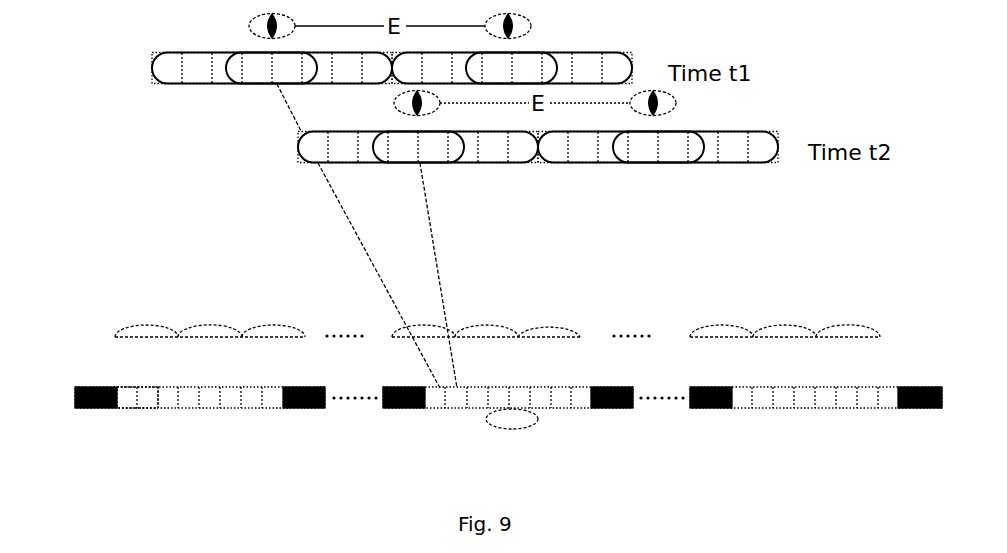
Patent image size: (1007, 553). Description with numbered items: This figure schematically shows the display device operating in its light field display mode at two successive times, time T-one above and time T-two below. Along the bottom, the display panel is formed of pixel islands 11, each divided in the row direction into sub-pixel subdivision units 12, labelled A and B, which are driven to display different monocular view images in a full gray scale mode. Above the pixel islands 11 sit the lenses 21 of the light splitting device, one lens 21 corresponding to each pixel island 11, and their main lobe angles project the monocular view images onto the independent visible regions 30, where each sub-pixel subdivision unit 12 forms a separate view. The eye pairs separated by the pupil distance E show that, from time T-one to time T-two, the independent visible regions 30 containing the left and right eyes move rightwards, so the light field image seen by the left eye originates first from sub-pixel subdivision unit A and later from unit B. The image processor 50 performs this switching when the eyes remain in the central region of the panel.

The independent visible region 30 is at (150, 66).
The lens 21 is at (116, 332).
The pixel island 11 is at (75, 398).
The sub-pixel subdivision unit 12 is at (128, 409).
The image processor 50 is at (523, 428).